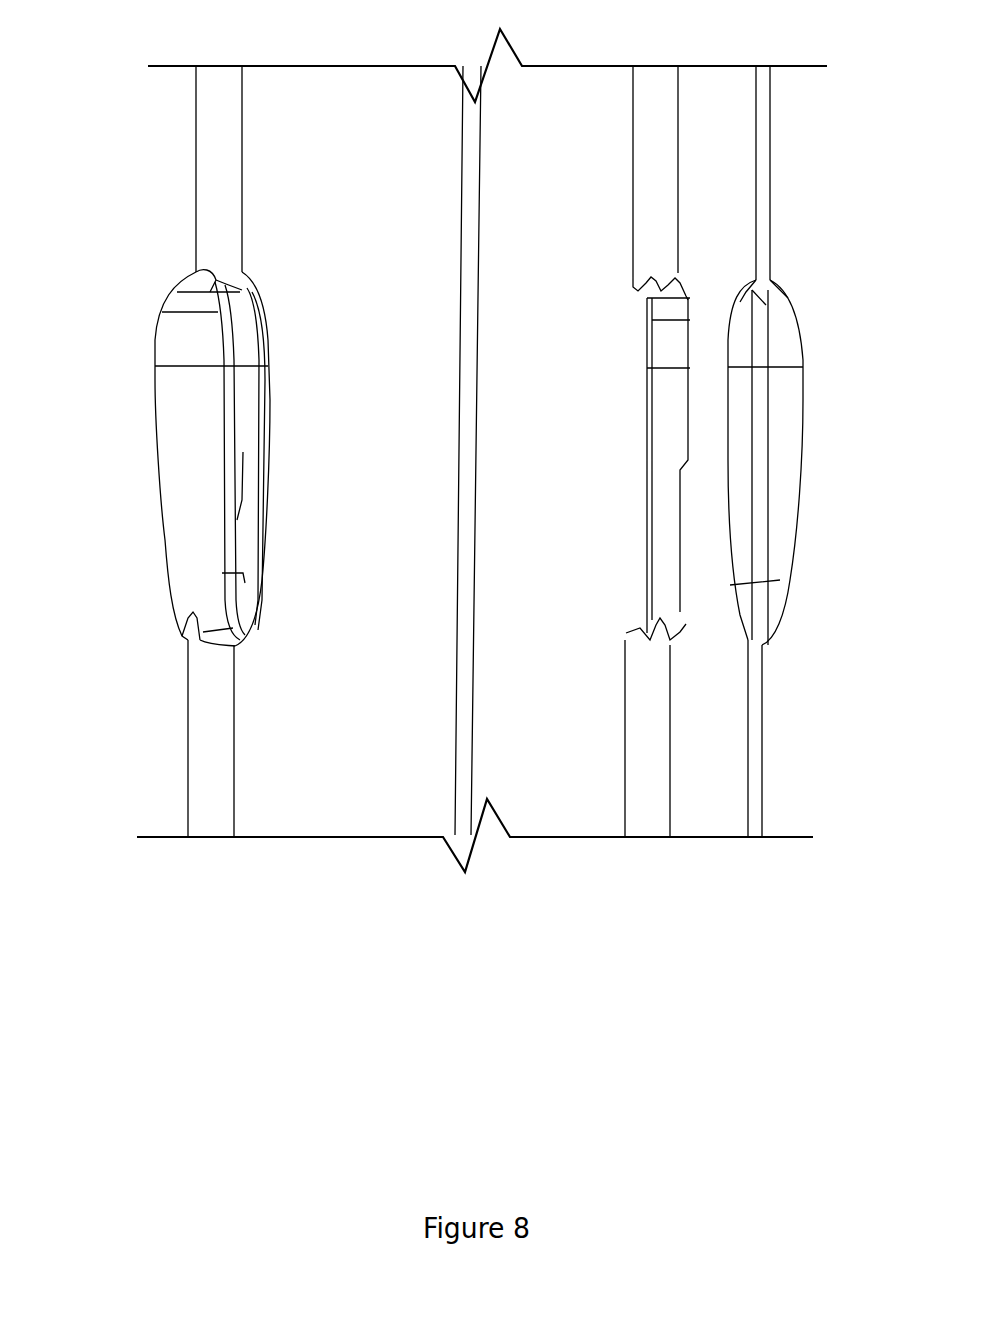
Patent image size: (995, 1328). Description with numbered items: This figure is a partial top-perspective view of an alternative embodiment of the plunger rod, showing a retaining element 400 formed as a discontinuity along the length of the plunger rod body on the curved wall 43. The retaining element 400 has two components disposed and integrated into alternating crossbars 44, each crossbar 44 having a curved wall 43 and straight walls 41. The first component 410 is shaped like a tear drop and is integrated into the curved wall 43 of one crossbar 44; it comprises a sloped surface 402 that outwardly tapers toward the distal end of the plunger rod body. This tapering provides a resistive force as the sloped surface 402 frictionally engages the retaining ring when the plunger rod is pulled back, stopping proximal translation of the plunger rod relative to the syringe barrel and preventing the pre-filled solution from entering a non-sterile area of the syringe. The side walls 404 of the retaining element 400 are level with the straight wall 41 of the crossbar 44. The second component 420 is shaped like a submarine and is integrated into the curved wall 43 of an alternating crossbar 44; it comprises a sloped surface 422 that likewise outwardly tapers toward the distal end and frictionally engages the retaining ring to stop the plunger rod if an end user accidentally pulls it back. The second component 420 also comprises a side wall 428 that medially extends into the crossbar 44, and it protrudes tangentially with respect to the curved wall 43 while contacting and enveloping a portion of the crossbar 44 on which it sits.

The retaining element 400 is at (190, 40).
The crossbar 44 is at (196, 158).
The curved wall 43 is at (215, 238).
The straight wall 41 is at (578, 270).
The first component 410 is at (690, 345).
The sloped surface 402 is at (670, 446).
The side walls 404 is at (622, 507).
The second component 420 is at (155, 381).
The sloped surface 422 is at (190, 482).
The side wall 428 is at (243, 452).